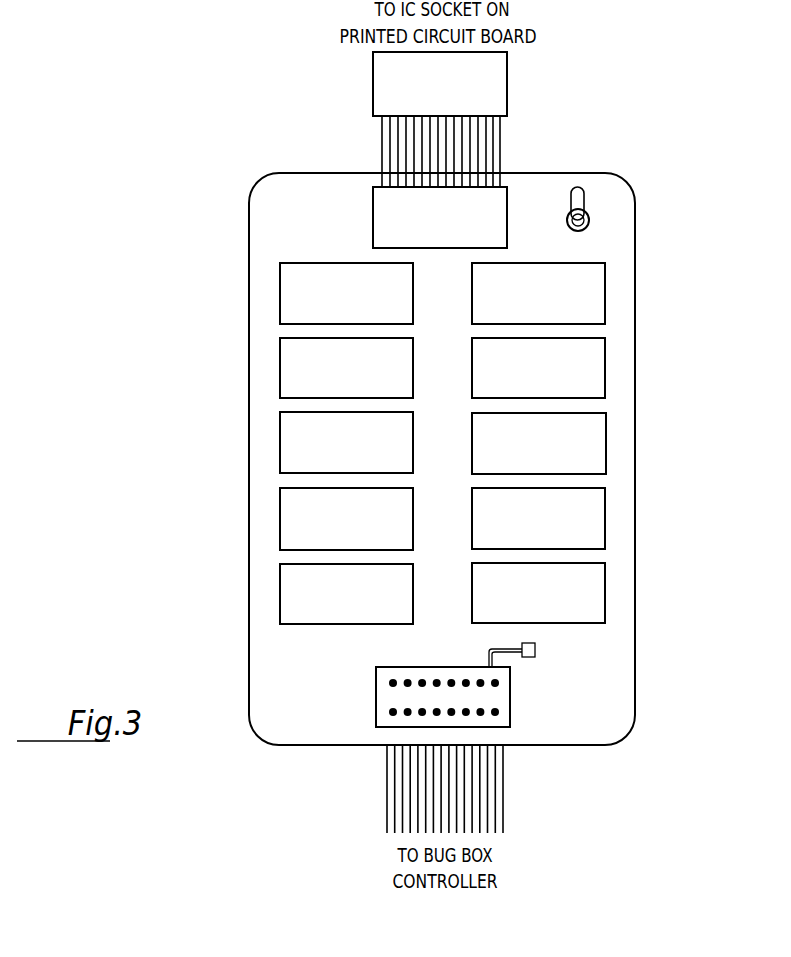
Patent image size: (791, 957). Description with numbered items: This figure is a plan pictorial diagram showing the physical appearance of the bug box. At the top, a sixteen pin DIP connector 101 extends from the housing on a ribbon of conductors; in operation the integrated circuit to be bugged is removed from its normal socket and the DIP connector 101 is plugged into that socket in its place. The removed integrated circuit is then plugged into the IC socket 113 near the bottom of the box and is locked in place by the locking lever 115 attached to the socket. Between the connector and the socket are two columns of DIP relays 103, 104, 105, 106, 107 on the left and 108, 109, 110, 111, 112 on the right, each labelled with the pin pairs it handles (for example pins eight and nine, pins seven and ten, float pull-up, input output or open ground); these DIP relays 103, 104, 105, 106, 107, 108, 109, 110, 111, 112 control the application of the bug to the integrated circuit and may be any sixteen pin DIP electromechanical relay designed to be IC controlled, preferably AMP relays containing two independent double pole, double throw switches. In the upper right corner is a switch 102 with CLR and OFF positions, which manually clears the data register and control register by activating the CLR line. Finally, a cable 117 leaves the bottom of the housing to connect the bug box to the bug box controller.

The 16 pin DIP connector 101 is at (507, 90).
The switch 102 is at (581, 190).
The DIP relay 103 is at (280, 291).
The DIP relay 104 is at (280, 364).
The DIP relay 105 is at (280, 442).
The DIP relay 106 is at (280, 520).
The DIP relay 107 is at (290, 595).
The DIP relay 108 is at (598, 297).
The DIP relay 109 is at (600, 370).
The DIP relay 110 is at (603, 448).
The DIP relay 111 is at (600, 523).
The DIP relay 112 is at (600, 598).
The IC socket 113 is at (376, 693).
The locking lever 115 is at (535, 651).
The cable 117 is at (503, 792).